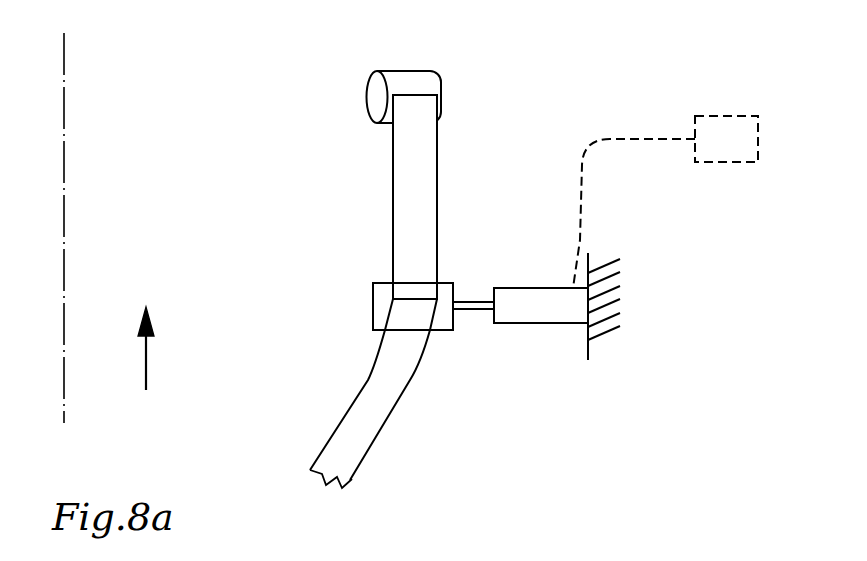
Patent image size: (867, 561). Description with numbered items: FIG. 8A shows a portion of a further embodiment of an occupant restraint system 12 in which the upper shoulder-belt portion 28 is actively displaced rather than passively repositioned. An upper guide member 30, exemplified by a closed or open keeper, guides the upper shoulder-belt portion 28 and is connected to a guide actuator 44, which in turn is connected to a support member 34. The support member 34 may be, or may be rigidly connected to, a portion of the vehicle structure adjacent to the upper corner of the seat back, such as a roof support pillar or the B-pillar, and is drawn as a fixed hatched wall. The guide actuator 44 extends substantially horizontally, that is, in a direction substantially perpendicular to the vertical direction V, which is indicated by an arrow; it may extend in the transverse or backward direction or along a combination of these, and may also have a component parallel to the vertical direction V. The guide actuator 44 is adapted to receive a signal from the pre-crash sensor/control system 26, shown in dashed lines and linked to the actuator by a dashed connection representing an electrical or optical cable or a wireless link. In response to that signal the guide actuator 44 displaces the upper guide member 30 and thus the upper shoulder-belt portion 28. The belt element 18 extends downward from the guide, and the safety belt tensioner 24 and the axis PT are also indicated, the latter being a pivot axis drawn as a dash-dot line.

The occupant restraint system 12 is at (533, 125).
The lower arm / ski 18 is at (362, 429).
The safety belt tensioner 24 is at (375, 93).
The pre-crash sensor/control system 26 is at (665, 202).
The upper shoulder-belt portion 28 is at (442, 349).
The upper guide member 30 is at (373, 310).
The support member 34 is at (599, 336).
The guide actuator 44 is at (527, 305).
The pivot axis P_T PT is at (66, 72).
The vertical axis V is at (146, 365).